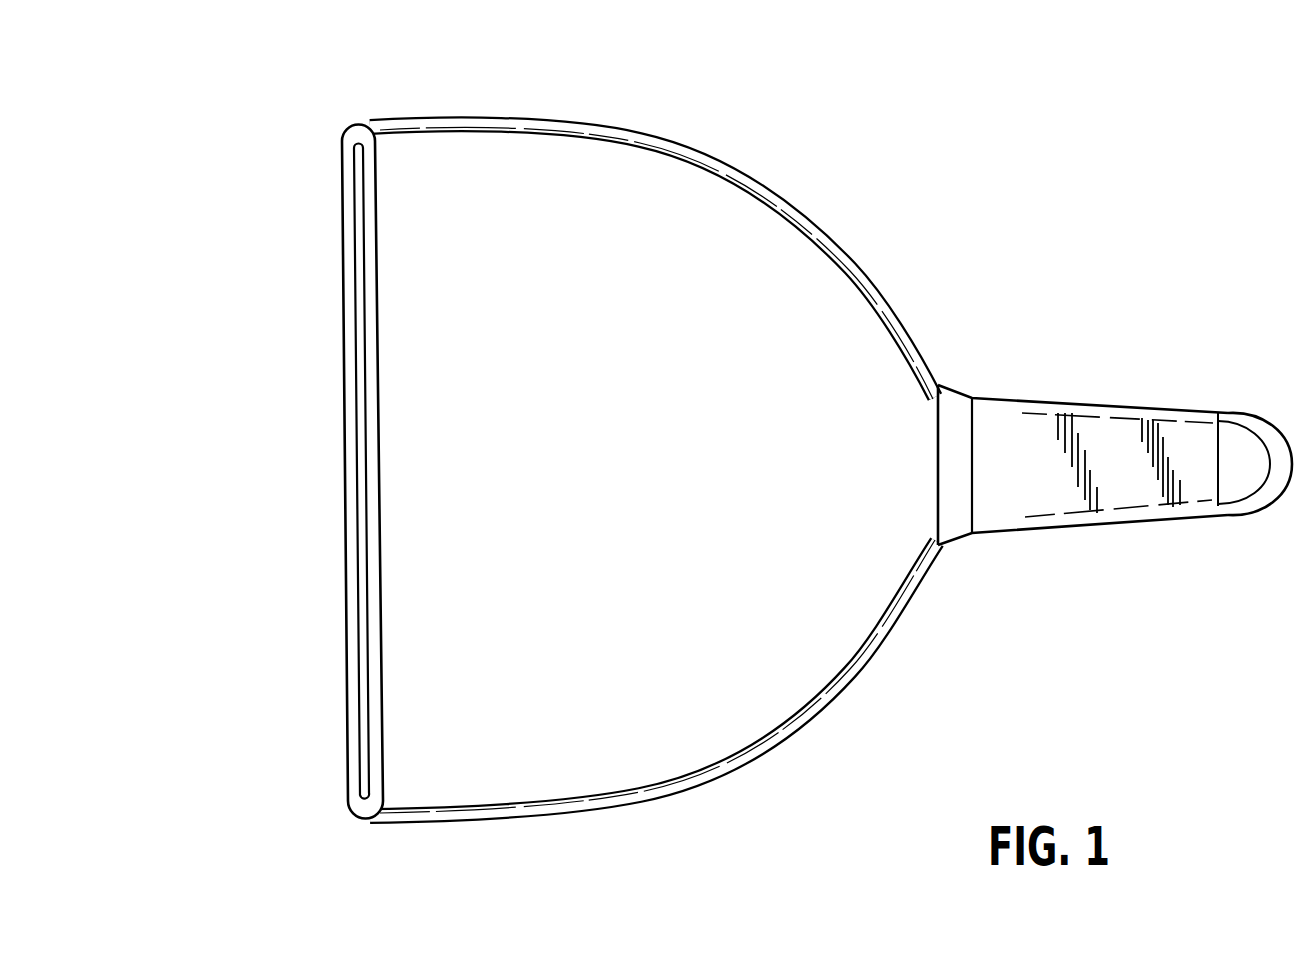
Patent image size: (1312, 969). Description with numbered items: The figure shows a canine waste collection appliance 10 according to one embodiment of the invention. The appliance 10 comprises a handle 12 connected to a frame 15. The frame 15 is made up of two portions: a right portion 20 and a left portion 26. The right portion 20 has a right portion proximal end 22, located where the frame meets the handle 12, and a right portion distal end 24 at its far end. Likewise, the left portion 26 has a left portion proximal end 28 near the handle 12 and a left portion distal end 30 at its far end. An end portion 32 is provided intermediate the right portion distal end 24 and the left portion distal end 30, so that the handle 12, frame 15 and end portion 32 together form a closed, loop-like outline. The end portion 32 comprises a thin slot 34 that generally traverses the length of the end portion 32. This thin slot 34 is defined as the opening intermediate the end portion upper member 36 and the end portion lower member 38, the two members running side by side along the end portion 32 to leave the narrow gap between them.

The canine waste collection appliance 10 is at (797, 136).
The handle 12 is at (1122, 495).
The frame 15 is at (702, 465).
The right portion 20 is at (628, 124).
The right portion proximal end 22 is at (920, 367).
The right portion distal end 24 is at (373, 120).
The left portion 26 is at (645, 806).
The left portion proximal end 28 is at (929, 553).
The left portion distal end 30 is at (370, 820).
The end portion 32 is at (326, 476).
The thin slot 34 is at (357, 365).
The end portion upper member 36 is at (380, 241).
The end portion lower member 38 is at (338, 207).